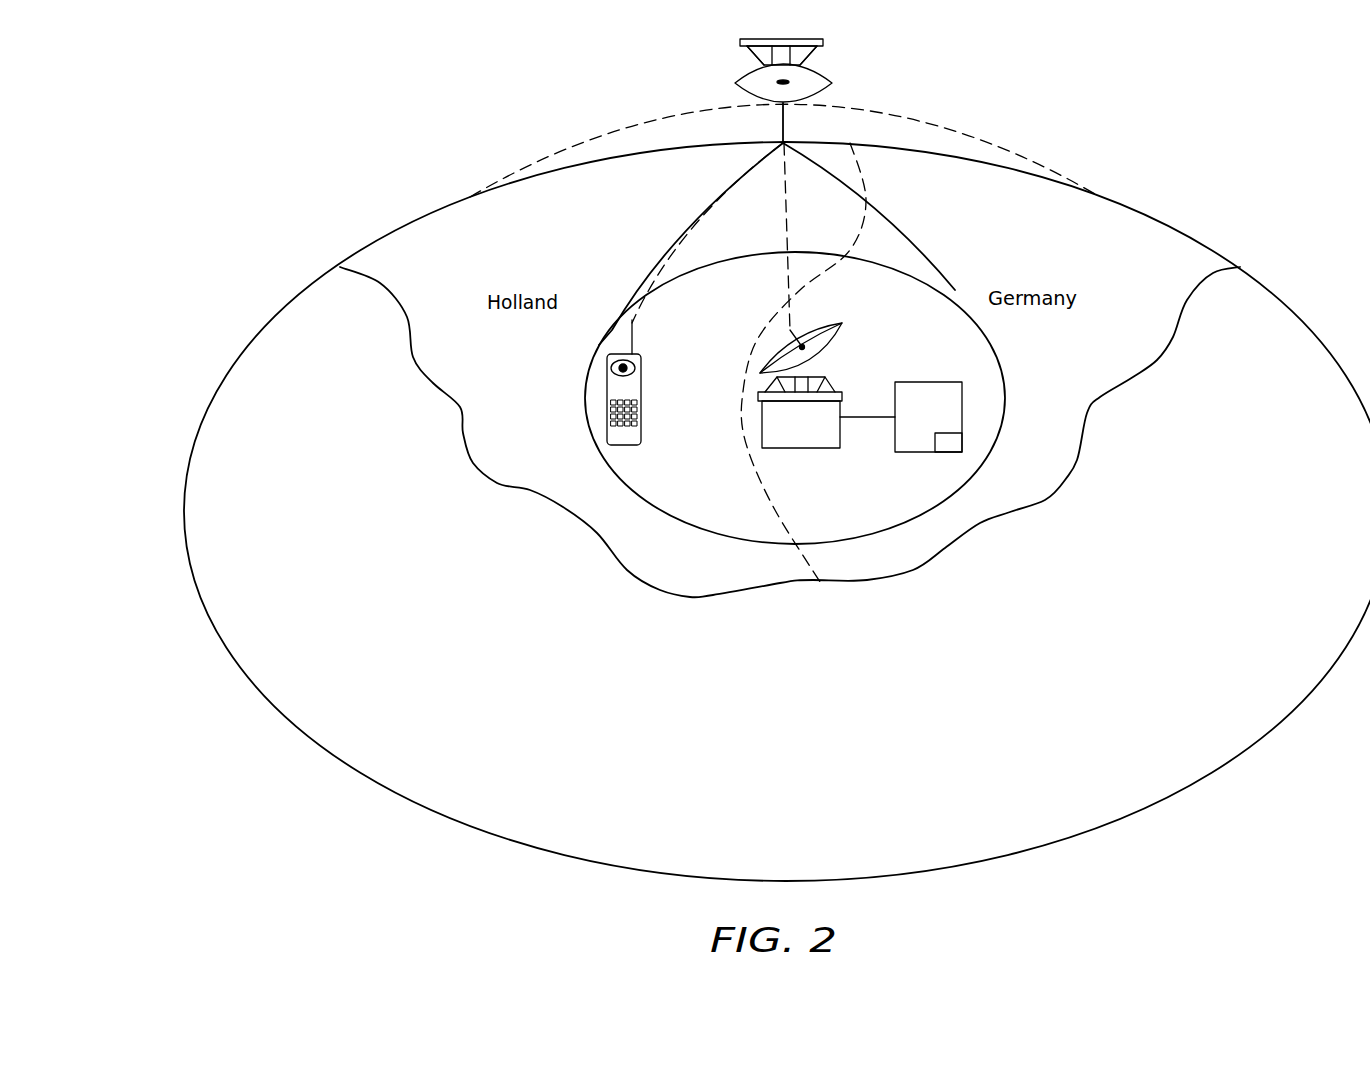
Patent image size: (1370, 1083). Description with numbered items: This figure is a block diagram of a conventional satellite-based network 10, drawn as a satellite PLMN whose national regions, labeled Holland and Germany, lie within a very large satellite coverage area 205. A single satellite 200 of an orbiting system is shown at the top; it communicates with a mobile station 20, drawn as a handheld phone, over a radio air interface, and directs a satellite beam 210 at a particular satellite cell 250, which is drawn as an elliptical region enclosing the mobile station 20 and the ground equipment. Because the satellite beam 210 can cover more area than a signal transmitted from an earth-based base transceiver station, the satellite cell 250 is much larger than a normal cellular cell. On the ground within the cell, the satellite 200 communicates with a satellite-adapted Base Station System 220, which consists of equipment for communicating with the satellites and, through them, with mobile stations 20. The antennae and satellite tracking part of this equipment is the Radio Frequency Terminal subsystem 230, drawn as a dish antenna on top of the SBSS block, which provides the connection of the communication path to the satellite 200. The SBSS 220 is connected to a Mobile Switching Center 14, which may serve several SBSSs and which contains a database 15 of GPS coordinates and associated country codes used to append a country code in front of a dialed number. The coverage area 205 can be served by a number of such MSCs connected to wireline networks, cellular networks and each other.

The satellite 200 is at (818, 48).
The satellite beam 210 is at (784, 113).
The mobile station 20 is at (607, 372).
The satellite-adapted Base Station System 220 is at (796, 376).
The Radio Frequency Terminal subsystem 230 is at (832, 326).
The Mobile Switching Center 14 is at (912, 381).
The database 15 is at (950, 455).
The satellite cell 250 is at (637, 503).
The satellite-based network 10 is at (923, 570).
The coverage area 205 is at (777, 511).